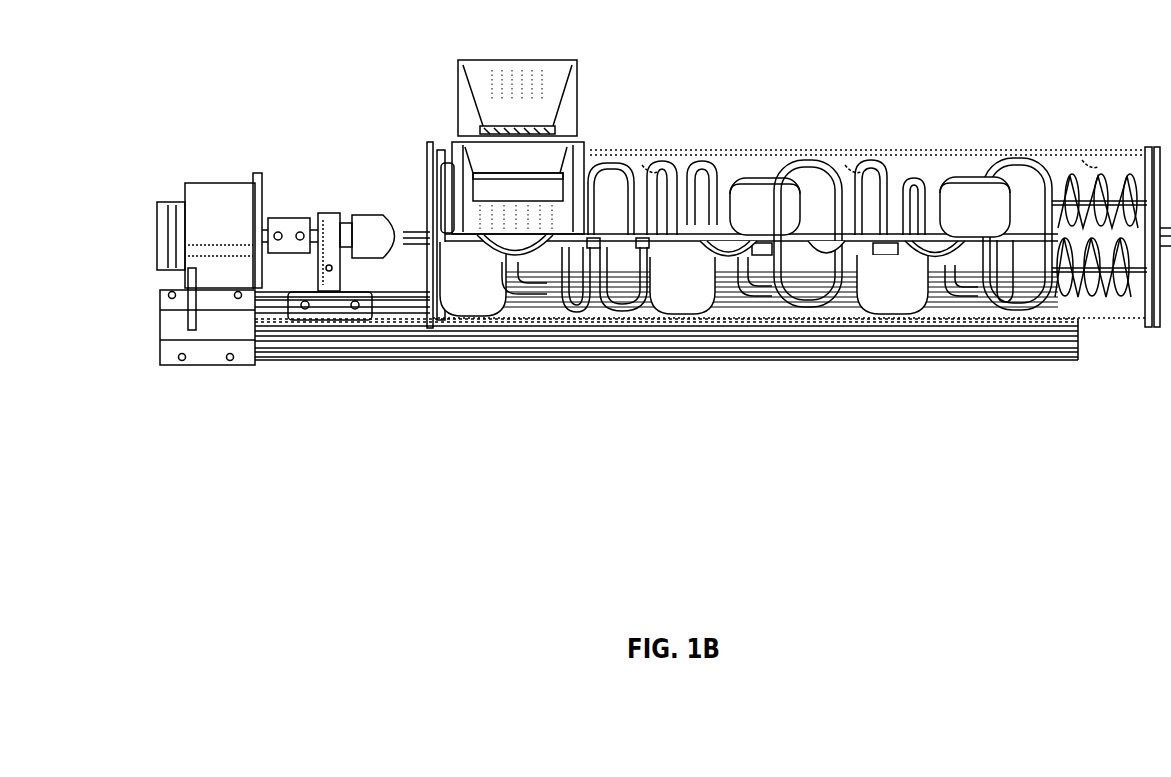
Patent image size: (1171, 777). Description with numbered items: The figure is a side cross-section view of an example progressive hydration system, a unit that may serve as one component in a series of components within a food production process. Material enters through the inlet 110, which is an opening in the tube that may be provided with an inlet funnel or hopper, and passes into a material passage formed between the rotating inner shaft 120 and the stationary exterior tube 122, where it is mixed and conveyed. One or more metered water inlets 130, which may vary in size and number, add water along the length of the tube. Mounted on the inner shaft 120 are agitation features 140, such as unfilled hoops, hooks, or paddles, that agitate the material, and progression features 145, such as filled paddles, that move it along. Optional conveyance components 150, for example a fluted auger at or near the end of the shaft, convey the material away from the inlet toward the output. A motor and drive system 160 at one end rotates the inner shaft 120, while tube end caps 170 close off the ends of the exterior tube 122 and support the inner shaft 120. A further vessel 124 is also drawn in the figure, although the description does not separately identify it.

The inlet 110 is at (546, 83).
The inner shaft 120 is at (413, 226).
The exterior tube 122 is at (735, 170).
The reaction vessel 124 is at (933, 171).
The metered water inlets 130 is at (638, 155).
The agitation features 140 is at (752, 299).
The progression features 145 is at (882, 284).
The conveyance components 150 is at (1128, 240).
The motor and drive system 160 is at (243, 163).
The tube end caps 170 is at (430, 140).